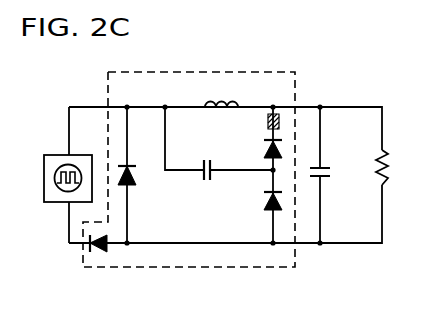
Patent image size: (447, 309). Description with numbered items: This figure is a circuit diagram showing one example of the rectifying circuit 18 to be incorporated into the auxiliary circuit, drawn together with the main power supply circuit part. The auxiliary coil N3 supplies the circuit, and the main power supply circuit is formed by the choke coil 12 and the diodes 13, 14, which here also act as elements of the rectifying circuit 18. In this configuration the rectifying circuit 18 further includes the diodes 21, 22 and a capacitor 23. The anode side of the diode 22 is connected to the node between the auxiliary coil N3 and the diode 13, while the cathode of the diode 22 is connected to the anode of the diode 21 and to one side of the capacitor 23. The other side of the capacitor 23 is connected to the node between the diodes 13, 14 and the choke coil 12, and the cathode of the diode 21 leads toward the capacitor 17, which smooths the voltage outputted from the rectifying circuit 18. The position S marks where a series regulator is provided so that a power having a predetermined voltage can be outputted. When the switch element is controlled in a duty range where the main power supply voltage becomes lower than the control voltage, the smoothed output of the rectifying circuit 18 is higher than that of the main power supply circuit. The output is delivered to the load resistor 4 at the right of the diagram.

The auxiliary coil N3 is at (54, 155).
The rectifying circuit 18 is at (243, 72).
The choke coil 12 is at (207, 103).
The diode 13 is at (130, 186).
The diode 14 is at (97, 252).
The position of series regulator S is at (268, 124).
The diode 21 is at (264, 150).
The diode 22 is at (264, 204).
The capacitor 23 is at (204, 177).
The capacitor 17 is at (325, 168).
The load resistor 4 is at (392, 160).